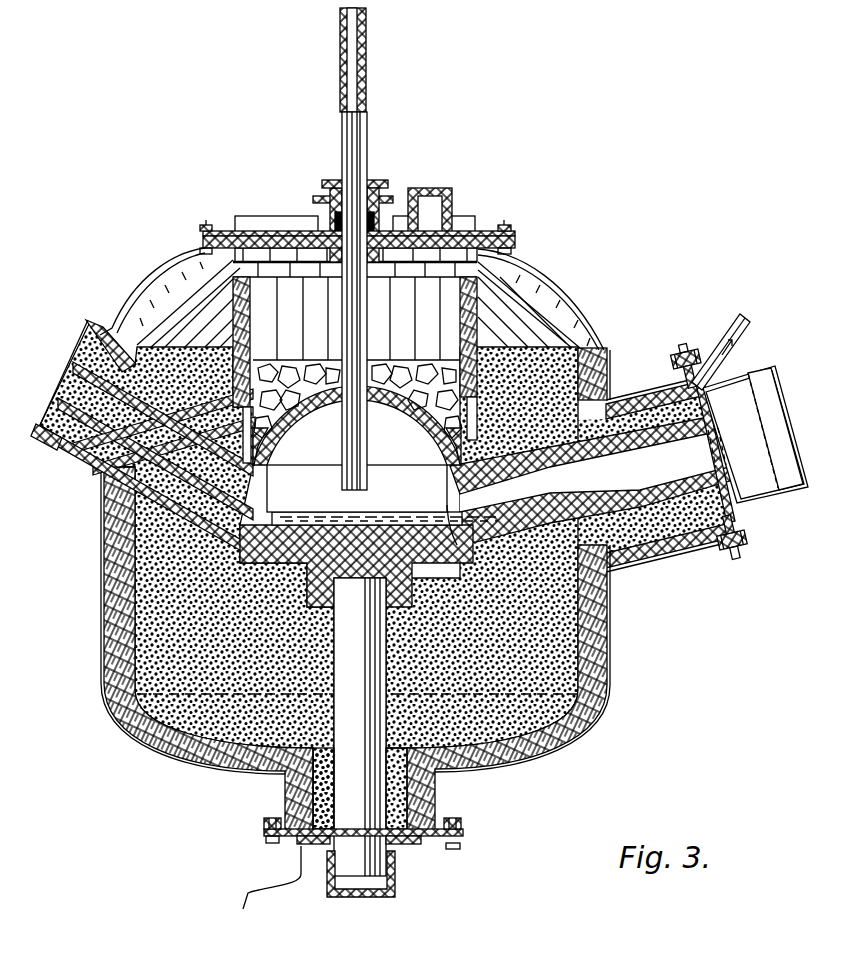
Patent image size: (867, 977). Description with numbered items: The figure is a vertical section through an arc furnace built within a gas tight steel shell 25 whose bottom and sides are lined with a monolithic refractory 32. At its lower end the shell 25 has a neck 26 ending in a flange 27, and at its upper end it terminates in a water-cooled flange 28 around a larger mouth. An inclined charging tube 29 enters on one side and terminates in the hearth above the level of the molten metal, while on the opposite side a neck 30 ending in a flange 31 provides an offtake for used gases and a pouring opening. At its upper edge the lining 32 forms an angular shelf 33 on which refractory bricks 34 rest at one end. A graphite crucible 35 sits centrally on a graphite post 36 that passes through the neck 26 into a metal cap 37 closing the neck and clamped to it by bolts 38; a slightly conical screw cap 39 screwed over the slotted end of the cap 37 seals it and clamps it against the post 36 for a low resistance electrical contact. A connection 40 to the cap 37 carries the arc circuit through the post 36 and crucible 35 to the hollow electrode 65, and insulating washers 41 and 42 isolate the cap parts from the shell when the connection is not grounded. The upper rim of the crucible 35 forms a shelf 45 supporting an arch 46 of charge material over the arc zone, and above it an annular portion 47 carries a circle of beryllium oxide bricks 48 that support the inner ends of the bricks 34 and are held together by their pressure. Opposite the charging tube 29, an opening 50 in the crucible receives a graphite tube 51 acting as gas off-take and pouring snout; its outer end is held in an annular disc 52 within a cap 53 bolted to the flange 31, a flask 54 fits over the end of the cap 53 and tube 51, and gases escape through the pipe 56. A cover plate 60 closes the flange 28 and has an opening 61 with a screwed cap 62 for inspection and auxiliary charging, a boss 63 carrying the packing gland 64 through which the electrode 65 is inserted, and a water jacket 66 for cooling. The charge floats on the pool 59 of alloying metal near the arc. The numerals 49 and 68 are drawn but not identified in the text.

The gas tight steel shell 25 is at (612, 633).
The neck 26 is at (436, 790).
The flange 27 is at (446, 822).
The water-cooled flange 28 is at (513, 240).
The inclined charging tube 29 is at (243, 360).
The neck 30 is at (667, 538).
The flange 31 is at (678, 348).
The monolithic refractory 32 is at (600, 664).
The angular shelf 33 is at (84, 360).
The refractory bricks 34 is at (197, 258).
The crucible 35 is at (253, 513).
The graphite post 36 is at (368, 650).
The metal cap 37 is at (448, 834).
The bolts 38 is at (452, 846).
The screw cap 39 is at (372, 897).
The connection 40 is at (247, 905).
The insulating washer 41 is at (262, 830).
The insulating washer 42 is at (265, 841).
The shelf 45 is at (275, 458).
The arch 46 is at (416, 416).
The annular portion 47 is at (105, 470).
The beryllium oxide bricks 48 is at (107, 422).
The dome shell 49 is at (163, 266).
The opening 50 is at (488, 464).
The graphite tube 51 is at (533, 462).
The annular disc 52 is at (730, 382).
The cap 53 is at (742, 505).
The flask 54 is at (787, 398).
The pipe 56 is at (733, 318).
The pool 59 is at (393, 511).
The cover plate 60 is at (468, 231).
The opening 61 is at (465, 228).
The cap 62 is at (433, 188).
The boss 63 is at (330, 222).
The packing gland 64 is at (384, 200).
The hollow electrode 65 is at (368, 125).
The water jacket 66 is at (259, 226).
The pipe flange 68 is at (72, 450).